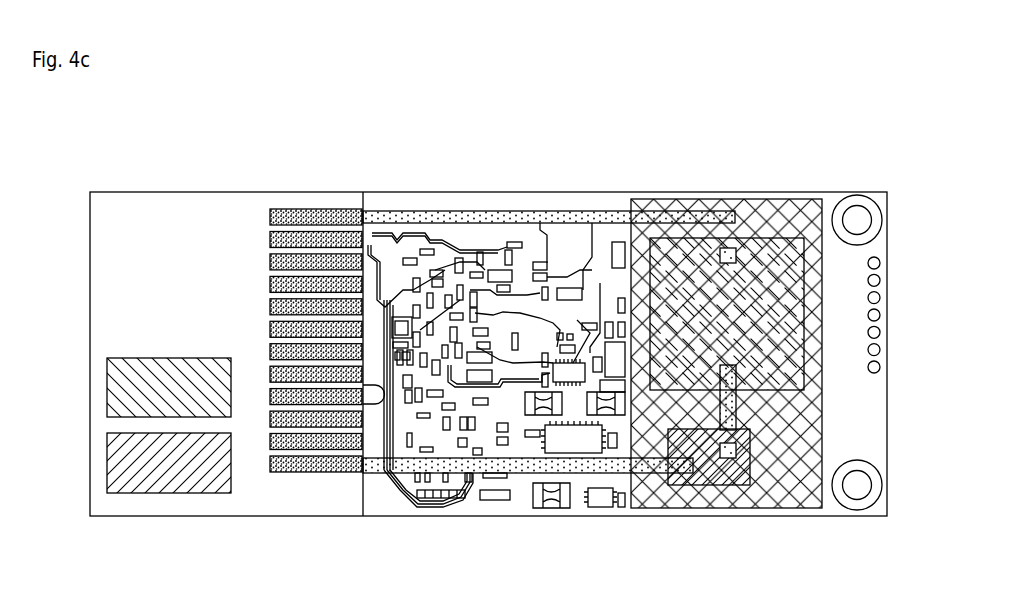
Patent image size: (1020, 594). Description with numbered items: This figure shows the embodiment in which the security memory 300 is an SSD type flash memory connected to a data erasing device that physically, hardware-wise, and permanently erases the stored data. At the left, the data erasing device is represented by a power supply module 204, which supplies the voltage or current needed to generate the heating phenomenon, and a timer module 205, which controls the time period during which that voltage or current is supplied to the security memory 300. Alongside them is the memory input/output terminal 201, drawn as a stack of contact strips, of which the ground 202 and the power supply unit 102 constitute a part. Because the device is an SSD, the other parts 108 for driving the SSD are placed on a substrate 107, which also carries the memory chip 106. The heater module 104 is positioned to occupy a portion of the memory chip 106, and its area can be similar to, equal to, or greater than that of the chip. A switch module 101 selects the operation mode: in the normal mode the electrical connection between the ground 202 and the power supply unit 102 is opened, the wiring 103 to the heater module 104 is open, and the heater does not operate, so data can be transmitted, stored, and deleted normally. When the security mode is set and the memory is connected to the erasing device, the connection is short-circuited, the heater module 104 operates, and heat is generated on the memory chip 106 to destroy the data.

The security memory 300 is at (124, 148).
The switch module 101 is at (718, 487).
The power supply unit 102 is at (316, 505).
The wiring 103 is at (505, 219).
The heater module 104 is at (760, 246).
The memory chip 106 is at (812, 210).
The substrate 107 is at (878, 451).
The other parts 108 is at (631, 516).
The memory input/output terminal 201 is at (286, 349).
The ground 202 is at (320, 216).
The power supply module 204 is at (118, 390).
The timer module 205 is at (118, 460).